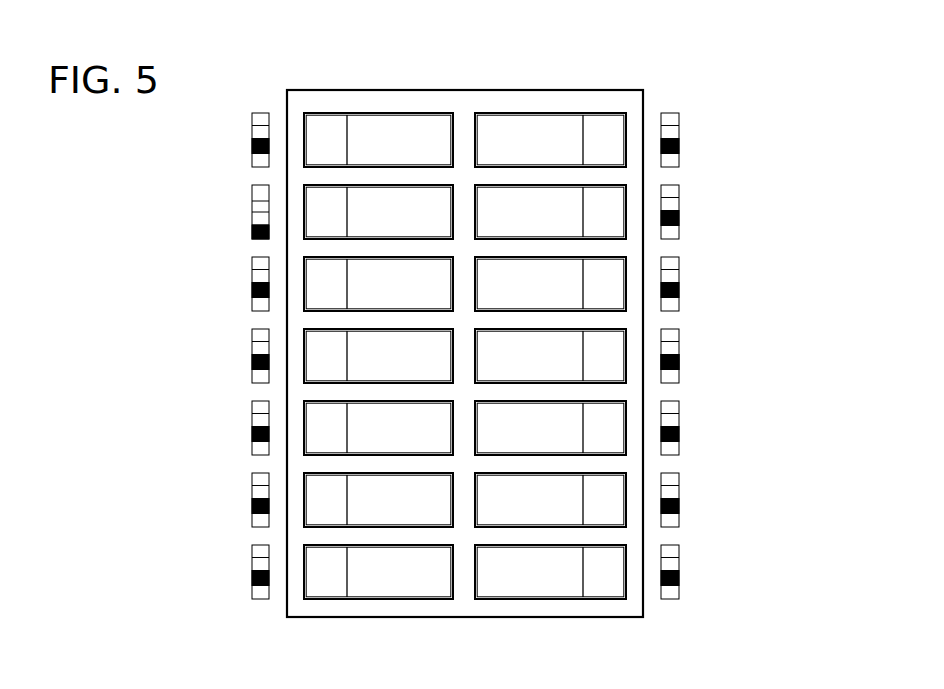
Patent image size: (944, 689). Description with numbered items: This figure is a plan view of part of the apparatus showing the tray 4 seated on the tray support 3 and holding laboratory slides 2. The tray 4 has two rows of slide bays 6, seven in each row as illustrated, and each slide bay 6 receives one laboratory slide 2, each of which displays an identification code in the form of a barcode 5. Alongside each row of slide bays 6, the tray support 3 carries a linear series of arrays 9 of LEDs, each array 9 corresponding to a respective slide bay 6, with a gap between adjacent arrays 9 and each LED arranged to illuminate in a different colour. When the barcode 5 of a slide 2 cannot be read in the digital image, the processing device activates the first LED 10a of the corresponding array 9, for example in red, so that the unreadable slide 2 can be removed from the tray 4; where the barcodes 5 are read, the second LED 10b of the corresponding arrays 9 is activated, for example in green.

The laboratory slide 2 is at (561, 124).
The tray support 3 is at (712, 265).
The tray 4 is at (533, 76).
The barcode 5 is at (608, 143).
The slide bay 6 is at (327, 239).
The array of LEDs 9 is at (232, 413).
The first LED 10a is at (253, 232).
The second LED 10b is at (252, 365).